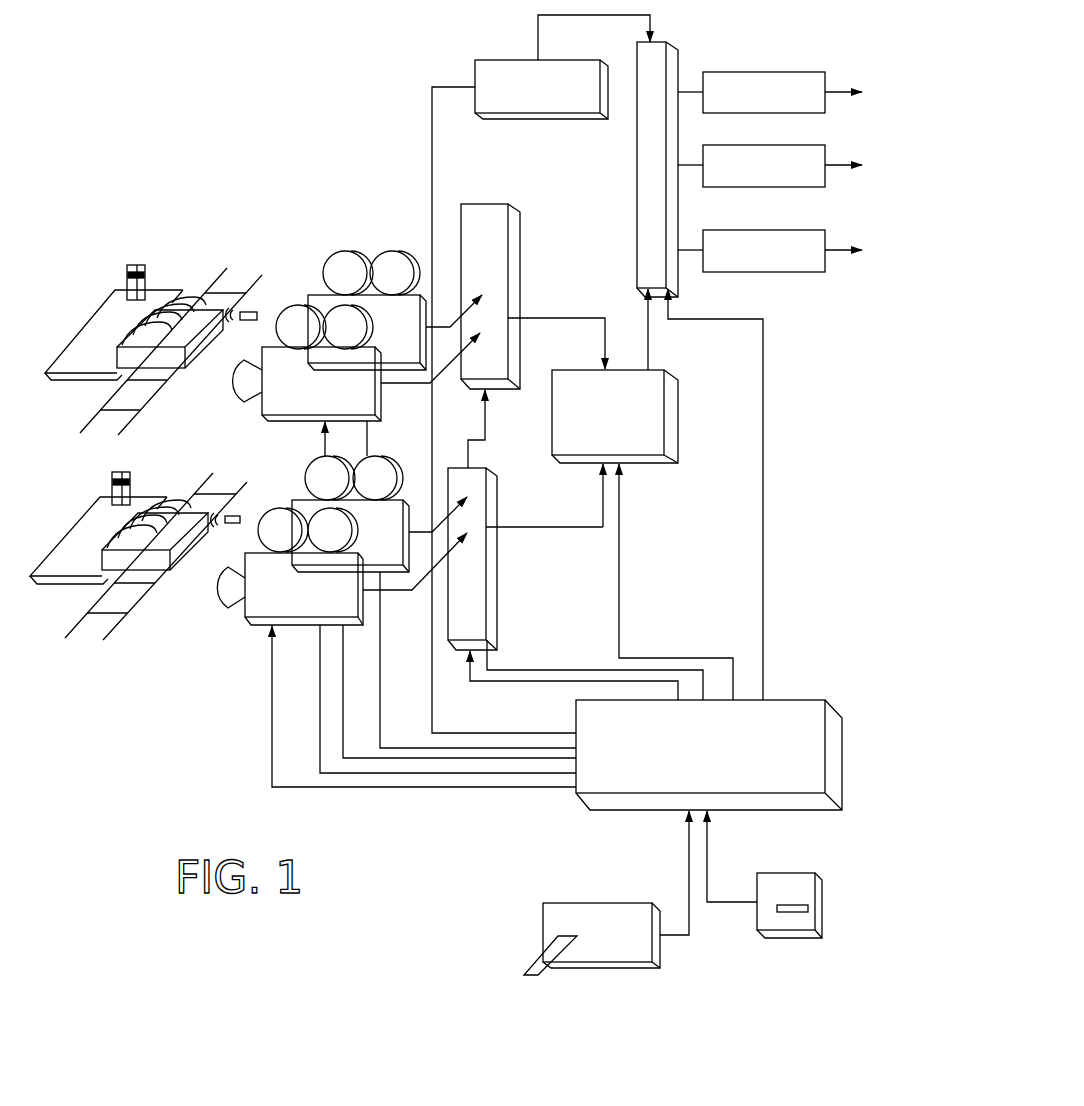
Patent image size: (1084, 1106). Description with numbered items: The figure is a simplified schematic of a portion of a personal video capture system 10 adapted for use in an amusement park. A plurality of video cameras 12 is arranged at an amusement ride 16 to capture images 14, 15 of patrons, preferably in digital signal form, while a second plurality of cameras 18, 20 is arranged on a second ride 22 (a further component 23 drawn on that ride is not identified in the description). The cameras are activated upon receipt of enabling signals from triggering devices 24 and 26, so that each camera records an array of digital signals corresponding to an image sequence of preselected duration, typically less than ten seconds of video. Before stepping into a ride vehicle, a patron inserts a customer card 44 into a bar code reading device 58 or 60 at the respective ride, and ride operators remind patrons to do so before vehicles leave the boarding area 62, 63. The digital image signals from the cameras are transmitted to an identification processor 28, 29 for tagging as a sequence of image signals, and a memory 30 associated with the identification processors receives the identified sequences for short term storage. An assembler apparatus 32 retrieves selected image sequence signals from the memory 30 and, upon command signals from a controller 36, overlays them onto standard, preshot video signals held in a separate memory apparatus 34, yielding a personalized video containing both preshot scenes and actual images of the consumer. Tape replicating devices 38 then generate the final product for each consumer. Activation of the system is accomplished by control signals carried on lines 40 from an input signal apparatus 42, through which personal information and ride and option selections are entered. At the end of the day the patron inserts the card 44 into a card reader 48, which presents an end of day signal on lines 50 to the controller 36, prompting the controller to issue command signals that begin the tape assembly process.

The personal video capture system 10 is at (233, 142).
The video cameras 12 is at (362, 240).
The captured image 14 is at (322, 300).
The captured image 15 is at (272, 402).
The amusement ride 16 is at (190, 257).
The camera of second plurality 18 is at (258, 633).
The camera of second plurality 20 is at (115, 660).
The second ride 22 is at (170, 388).
The second conveyor belt 23 is at (170, 583).
The triggering device 24 is at (257, 303).
The triggering device 26 is at (242, 508).
The identification processor 28 is at (483, 204).
The identification processor 29 is at (488, 510).
The memory 30 is at (673, 411).
The assembler apparatus 32 is at (637, 200).
The separate memory apparatus 34 is at (497, 60).
The controller 36 is at (796, 700).
The tape replicating devices 38 is at (790, 72).
The lines 40 is at (689, 857).
The input signal apparatus 42 is at (591, 915).
The card 44 is at (542, 947).
The card reader 48 is at (797, 882).
The lines 50 is at (707, 858).
The bar code reading device 58 is at (127, 285).
The bar code reading device 60 is at (112, 490).
The boarding area 62 is at (98, 326).
The boarding area 63 is at (85, 537).